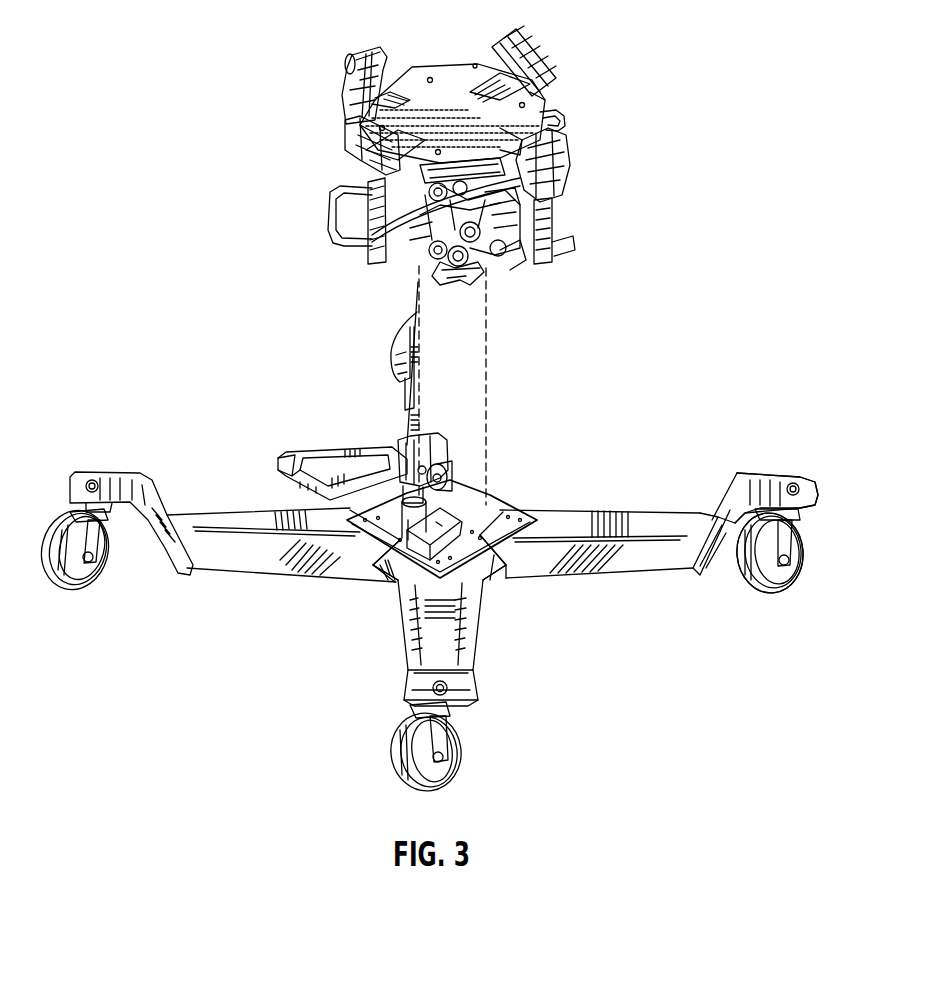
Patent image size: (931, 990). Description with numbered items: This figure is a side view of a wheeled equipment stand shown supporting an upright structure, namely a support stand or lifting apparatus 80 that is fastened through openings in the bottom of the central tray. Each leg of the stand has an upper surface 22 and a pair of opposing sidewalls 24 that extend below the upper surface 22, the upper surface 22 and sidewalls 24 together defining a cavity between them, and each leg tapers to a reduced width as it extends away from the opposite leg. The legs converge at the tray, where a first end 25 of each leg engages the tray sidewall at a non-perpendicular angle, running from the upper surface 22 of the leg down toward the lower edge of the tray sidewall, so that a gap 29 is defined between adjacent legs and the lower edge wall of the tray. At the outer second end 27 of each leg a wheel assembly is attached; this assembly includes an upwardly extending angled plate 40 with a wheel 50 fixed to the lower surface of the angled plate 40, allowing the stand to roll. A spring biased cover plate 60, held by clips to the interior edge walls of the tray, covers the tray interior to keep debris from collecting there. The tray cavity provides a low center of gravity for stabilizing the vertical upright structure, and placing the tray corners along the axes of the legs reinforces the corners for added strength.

The upper surface 22 is at (580, 513).
The opposing sidewalls 24 is at (232, 555).
The first end 25 is at (507, 563).
The second end 27 is at (712, 513).
The gap 29 is at (396, 583).
The angled plate 40 is at (750, 477).
The wheel 50 is at (770, 590).
The spring biased cover plate 60 is at (502, 500).
The support stand or lifting apparatus 80 is at (488, 373).